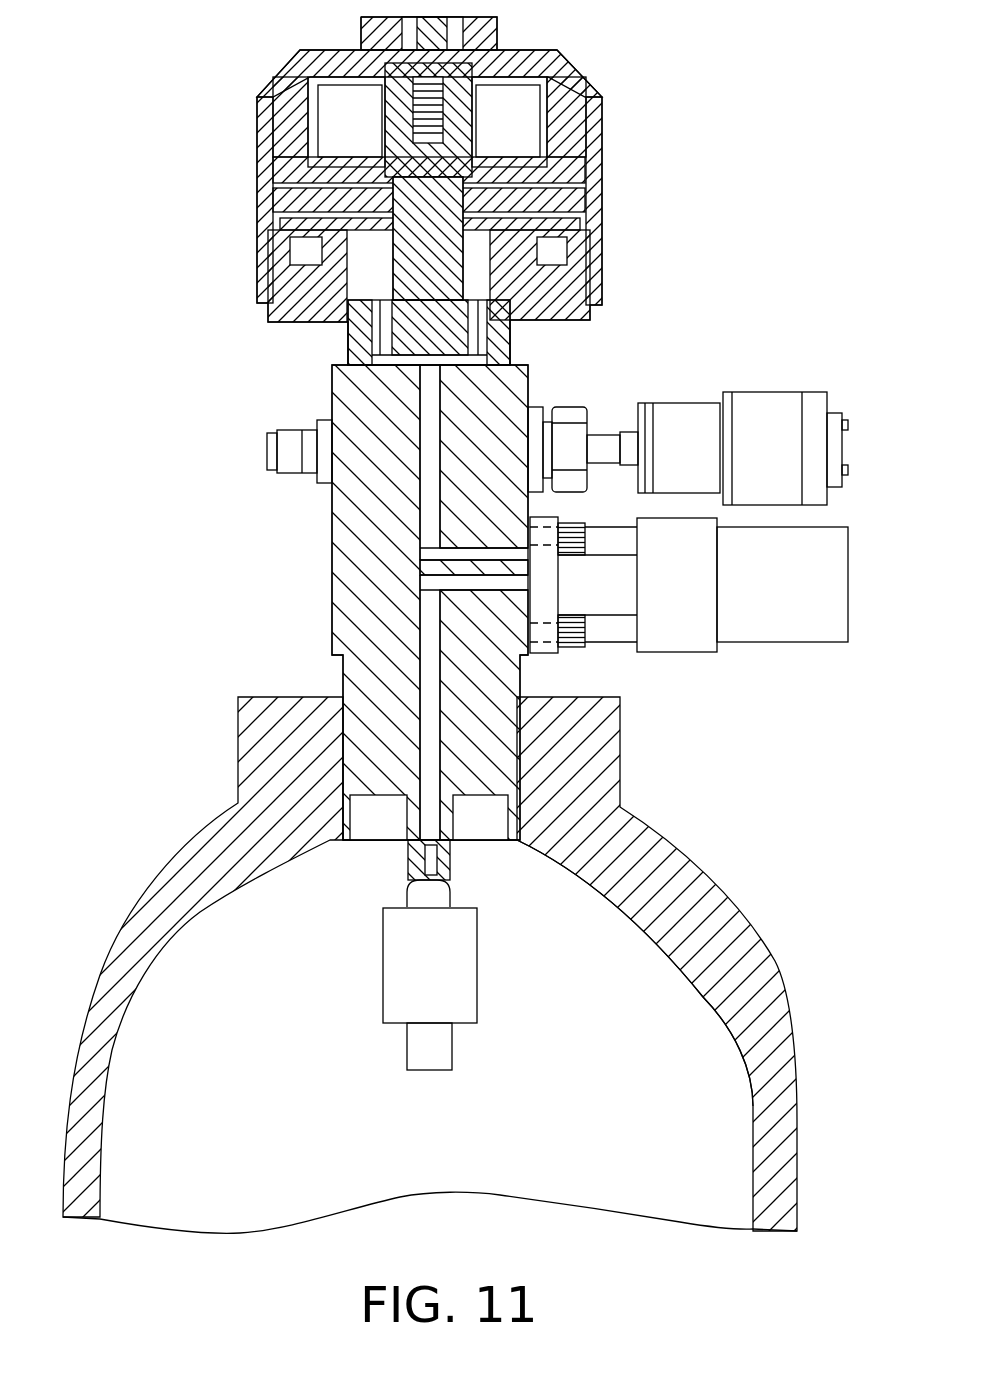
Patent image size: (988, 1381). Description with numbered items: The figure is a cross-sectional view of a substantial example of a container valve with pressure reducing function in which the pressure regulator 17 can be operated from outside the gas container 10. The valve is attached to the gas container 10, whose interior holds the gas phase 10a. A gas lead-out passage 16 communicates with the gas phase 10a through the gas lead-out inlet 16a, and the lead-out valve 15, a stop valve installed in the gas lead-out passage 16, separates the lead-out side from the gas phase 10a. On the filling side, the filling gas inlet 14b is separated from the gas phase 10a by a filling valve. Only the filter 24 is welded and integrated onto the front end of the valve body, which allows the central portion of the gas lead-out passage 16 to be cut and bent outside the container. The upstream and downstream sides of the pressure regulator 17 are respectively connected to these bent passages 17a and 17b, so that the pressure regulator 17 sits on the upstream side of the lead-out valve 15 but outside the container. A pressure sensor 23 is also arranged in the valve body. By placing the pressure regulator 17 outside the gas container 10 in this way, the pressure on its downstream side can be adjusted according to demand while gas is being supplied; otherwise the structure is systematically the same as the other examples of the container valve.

The gas container 10 is at (475, 965).
The gas phase 10a is at (667, 1003).
The filling gas inlet 14b is at (267, 448).
The lead-out valve 15 is at (613, 228).
The gas lead-out passage 16 is at (430, 390).
The gas lead-out inlet 16a is at (437, 1072).
The pressure regulator 17 is at (758, 657).
The bent passage 17a is at (463, 585).
The bent passage 17b is at (457, 556).
The pressure sensor 23 is at (755, 380).
The filter 24 is at (480, 962).